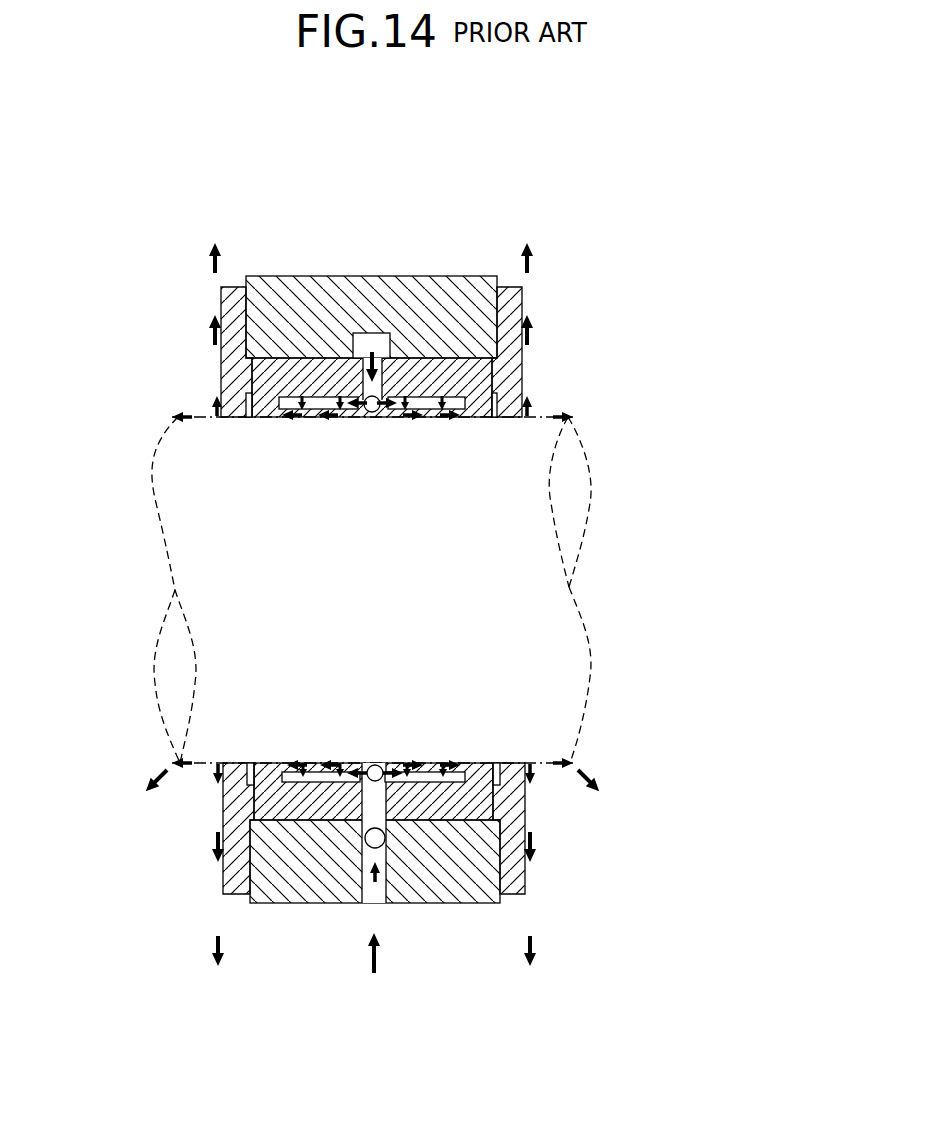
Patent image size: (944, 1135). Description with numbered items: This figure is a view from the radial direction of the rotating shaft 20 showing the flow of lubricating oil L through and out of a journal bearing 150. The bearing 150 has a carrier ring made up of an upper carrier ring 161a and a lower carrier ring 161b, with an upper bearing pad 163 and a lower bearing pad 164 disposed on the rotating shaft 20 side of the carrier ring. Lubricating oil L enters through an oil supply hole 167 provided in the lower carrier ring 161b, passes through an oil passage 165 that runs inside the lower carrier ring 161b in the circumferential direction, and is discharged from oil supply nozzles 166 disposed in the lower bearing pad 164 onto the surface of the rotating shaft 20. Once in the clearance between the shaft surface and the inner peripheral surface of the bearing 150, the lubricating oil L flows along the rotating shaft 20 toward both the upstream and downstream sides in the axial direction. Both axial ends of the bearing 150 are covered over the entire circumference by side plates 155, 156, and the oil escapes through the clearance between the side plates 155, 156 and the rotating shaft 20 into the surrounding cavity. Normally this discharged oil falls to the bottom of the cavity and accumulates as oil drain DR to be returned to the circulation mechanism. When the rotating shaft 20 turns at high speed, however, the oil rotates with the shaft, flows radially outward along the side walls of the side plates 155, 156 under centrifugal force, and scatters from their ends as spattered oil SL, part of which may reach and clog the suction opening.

The bearing 150 is at (491, 216).
The rotating shaft 20 is at (205, 437).
The upper carrier ring 161a is at (297, 282).
The lower carrier ring 161b is at (312, 893).
The upper bearing pad 163 is at (473, 375).
The lower bearing pad 164 is at (253, 803).
The oil passage 165 is at (376, 333).
The oil supply nozzles 166 is at (452, 783).
The oil supply hole 167 is at (383, 893).
The side plate 155 is at (232, 883).
The side plate 156 is at (527, 812).
The spattered oil SL is at (205, 265).
The oil drain DR is at (562, 403).
The lubricating oil L is at (375, 968).